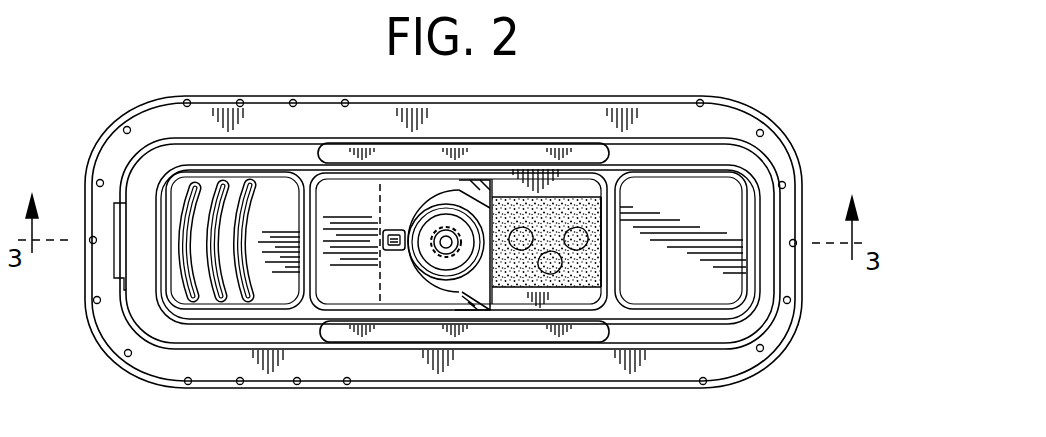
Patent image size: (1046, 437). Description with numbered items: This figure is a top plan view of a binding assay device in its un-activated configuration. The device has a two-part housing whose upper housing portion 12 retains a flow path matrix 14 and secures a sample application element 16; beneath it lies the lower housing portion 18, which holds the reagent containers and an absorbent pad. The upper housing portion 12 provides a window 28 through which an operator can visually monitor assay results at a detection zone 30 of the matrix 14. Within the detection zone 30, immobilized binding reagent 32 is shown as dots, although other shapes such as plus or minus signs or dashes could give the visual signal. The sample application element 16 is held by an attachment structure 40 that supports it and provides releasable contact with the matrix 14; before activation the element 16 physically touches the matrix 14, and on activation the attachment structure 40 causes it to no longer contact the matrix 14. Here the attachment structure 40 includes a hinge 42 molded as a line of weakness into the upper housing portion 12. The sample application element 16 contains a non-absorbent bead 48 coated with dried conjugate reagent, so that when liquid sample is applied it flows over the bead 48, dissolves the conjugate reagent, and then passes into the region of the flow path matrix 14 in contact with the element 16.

The upper housing portion 12 is at (270, 148).
The flow path matrix 14 is at (507, 205).
The sample application element 16 is at (436, 190).
The lower housing portion 18 is at (100, 161).
The window 28 is at (572, 197).
The detection zone 30 is at (600, 270).
The immobilized binding reagent 32 is at (548, 268).
The attachment structure 40 is at (398, 298).
The hinge 42 is at (378, 195).
The bead 48 is at (440, 245).